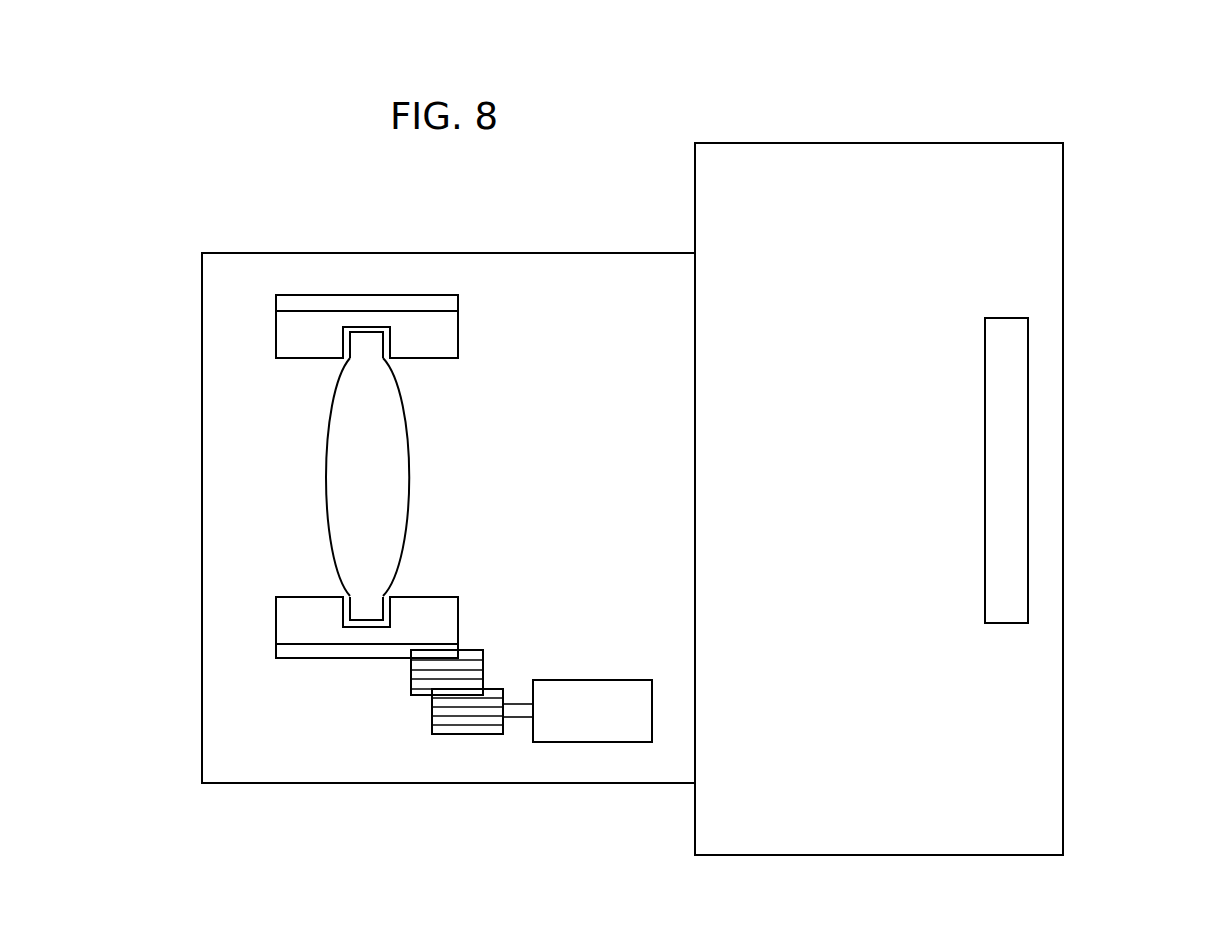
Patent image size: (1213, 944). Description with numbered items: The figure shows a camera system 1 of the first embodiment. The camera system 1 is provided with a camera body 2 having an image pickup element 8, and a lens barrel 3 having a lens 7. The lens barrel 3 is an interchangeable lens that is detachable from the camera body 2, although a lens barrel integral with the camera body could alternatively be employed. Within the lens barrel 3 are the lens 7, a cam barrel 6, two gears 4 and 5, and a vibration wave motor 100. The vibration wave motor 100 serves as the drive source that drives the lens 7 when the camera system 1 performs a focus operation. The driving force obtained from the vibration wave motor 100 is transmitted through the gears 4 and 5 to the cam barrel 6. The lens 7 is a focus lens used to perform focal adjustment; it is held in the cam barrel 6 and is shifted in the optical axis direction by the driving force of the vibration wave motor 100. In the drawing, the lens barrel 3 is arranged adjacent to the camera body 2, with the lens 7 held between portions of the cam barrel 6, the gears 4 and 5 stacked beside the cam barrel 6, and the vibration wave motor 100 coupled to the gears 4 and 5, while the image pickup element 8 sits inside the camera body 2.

The camera system 1 is at (1139, 130).
The camera body 2 is at (865, 167).
The lens barrel 3 is at (599, 270).
The gear 4 is at (476, 720).
The gear 5 is at (424, 683).
The cam barrel 6 is at (312, 644).
The lens 7 is at (347, 468).
The image pickup element 8 is at (1010, 427).
The vibration wave motor 100 is at (580, 720).